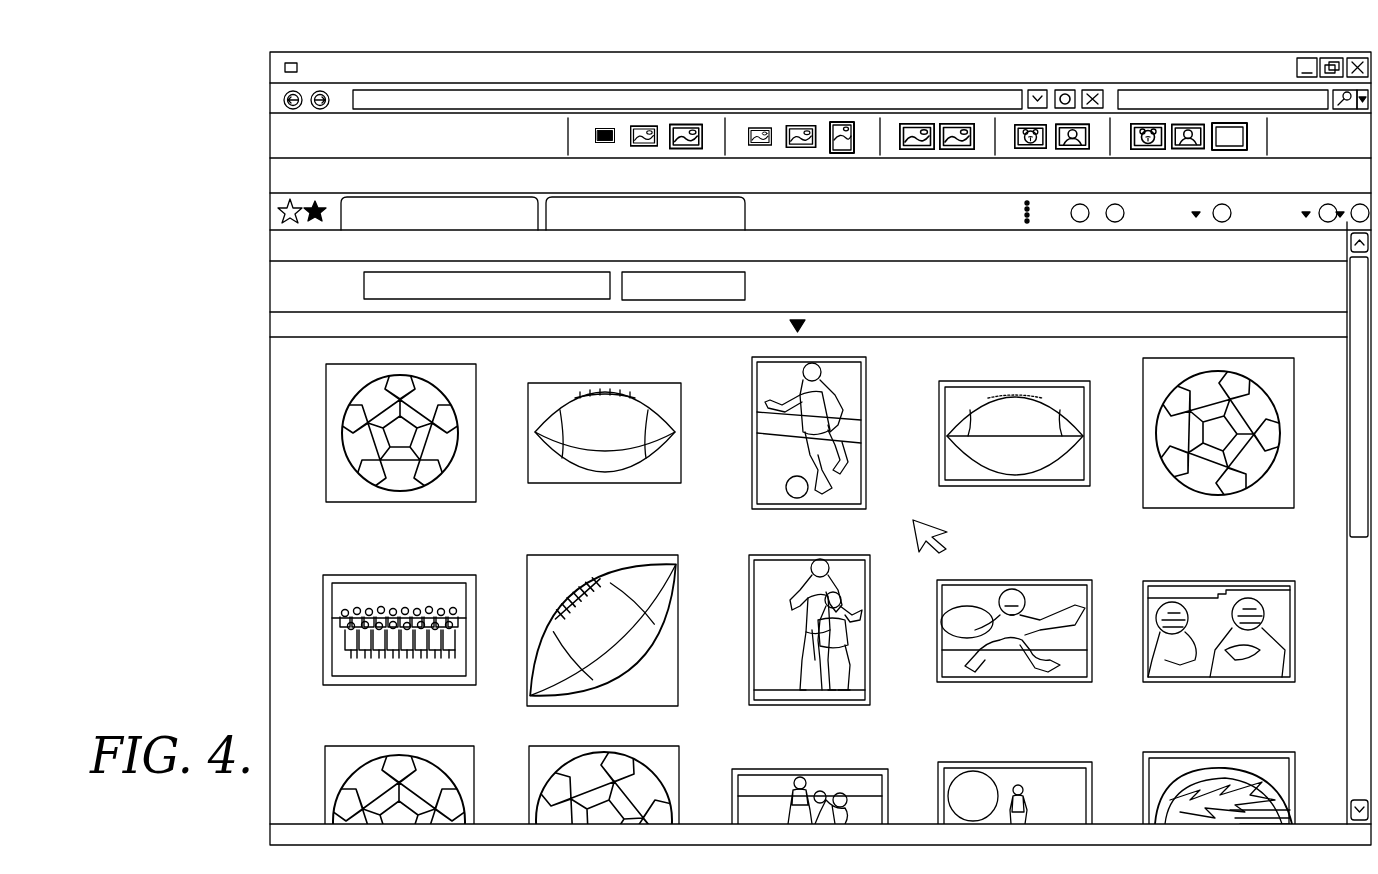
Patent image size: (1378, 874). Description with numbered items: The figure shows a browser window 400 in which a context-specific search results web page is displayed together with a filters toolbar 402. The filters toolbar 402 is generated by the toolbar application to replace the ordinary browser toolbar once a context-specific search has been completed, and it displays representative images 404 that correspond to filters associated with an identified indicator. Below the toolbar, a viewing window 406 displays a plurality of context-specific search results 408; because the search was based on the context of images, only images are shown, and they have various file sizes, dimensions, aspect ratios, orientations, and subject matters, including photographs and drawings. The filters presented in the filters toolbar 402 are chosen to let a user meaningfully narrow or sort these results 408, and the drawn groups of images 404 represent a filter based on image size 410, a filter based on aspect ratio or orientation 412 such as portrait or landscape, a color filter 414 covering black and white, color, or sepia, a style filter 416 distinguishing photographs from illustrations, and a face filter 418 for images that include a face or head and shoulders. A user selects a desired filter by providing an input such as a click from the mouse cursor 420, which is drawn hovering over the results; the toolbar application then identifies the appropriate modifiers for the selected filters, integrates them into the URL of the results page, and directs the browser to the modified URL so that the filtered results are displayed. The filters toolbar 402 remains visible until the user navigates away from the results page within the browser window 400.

The browser window 400 is at (240, 74).
The filters toolbar 402 is at (274, 130).
The images corresponding to filters 404 is at (597, 127).
The viewing window 406 is at (270, 508).
The context-specific search results 408 is at (477, 503).
The size filter 410 is at (688, 121).
The aspect ratio or orientation filter 412 is at (843, 116).
The color filter 414 is at (968, 116).
The style filter 416 is at (1088, 152).
The face filter 418 is at (1243, 152).
The mouse cursor 420 is at (935, 527).